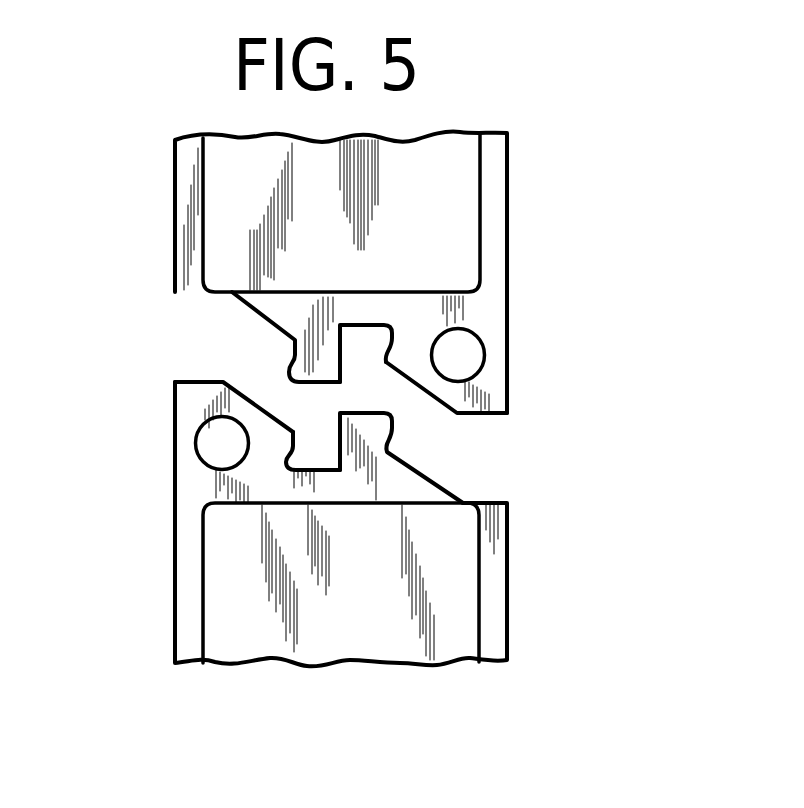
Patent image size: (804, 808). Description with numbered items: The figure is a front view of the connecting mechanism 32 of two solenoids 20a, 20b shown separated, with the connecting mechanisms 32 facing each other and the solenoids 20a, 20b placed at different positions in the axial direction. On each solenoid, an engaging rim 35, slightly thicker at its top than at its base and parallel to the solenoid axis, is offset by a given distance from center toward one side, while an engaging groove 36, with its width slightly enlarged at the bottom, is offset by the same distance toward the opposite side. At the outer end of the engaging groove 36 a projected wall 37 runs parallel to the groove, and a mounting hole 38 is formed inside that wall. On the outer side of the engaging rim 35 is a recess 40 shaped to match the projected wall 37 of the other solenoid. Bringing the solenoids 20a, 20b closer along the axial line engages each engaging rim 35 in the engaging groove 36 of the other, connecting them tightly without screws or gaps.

The solenoid 20a is at (497, 185).
The solenoid 20b is at (507, 617).
The connecting mechanism 32 is at (212, 340).
The engaging rim 35 is at (295, 367).
The engaging groove 36 is at (368, 340).
The projected wall 37 is at (492, 395).
The mounting hole 38 is at (452, 345).
The recess 40 is at (193, 292).